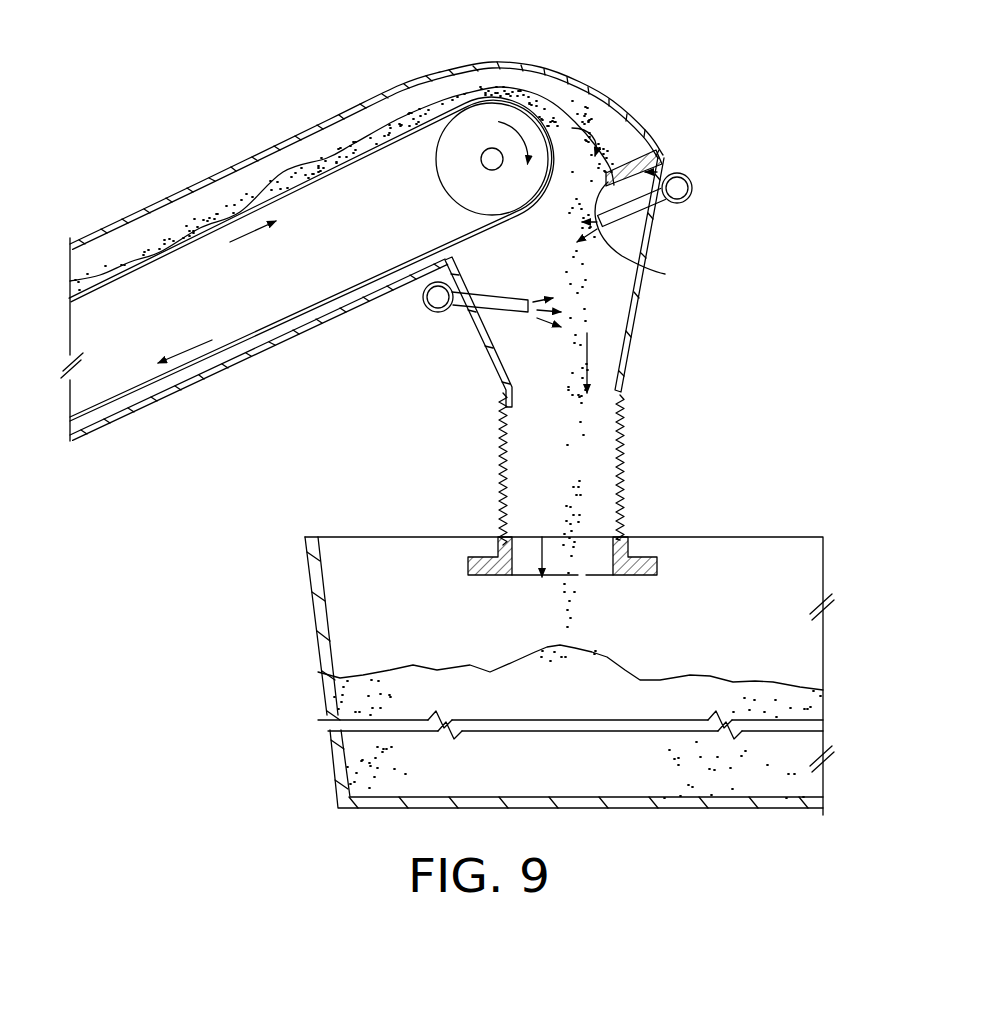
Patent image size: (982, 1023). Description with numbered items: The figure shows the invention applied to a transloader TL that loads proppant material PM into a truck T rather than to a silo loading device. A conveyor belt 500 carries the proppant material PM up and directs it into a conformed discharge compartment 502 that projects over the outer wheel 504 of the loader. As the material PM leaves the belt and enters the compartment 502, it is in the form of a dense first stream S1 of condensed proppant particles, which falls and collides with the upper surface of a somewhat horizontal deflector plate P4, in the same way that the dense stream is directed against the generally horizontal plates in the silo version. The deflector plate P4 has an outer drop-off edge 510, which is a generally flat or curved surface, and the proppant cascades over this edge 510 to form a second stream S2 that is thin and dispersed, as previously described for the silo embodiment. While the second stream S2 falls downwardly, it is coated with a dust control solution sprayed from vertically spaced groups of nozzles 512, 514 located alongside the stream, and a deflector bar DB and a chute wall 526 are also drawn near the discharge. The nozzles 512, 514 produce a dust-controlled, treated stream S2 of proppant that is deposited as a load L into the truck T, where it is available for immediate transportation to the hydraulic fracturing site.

The transloader TL is at (283, 130).
The conveyor belt 500 is at (168, 247).
The proppant material PM is at (229, 210).
The conformed discharge compartment 502 is at (557, 83).
The outer wheel 504 is at (480, 123).
The first stream S1 is at (536, 97).
The deflector bar DB is at (660, 150).
The deflector plate P4 is at (664, 170).
The outer drop-off edge 510 is at (632, 232).
The nozzles 512 is at (665, 274).
The second stream S2 is at (566, 337).
The chute wall 526 is at (625, 375).
The nozzles 514 is at (518, 308).
The truck T is at (305, 568).
The load L is at (713, 684).